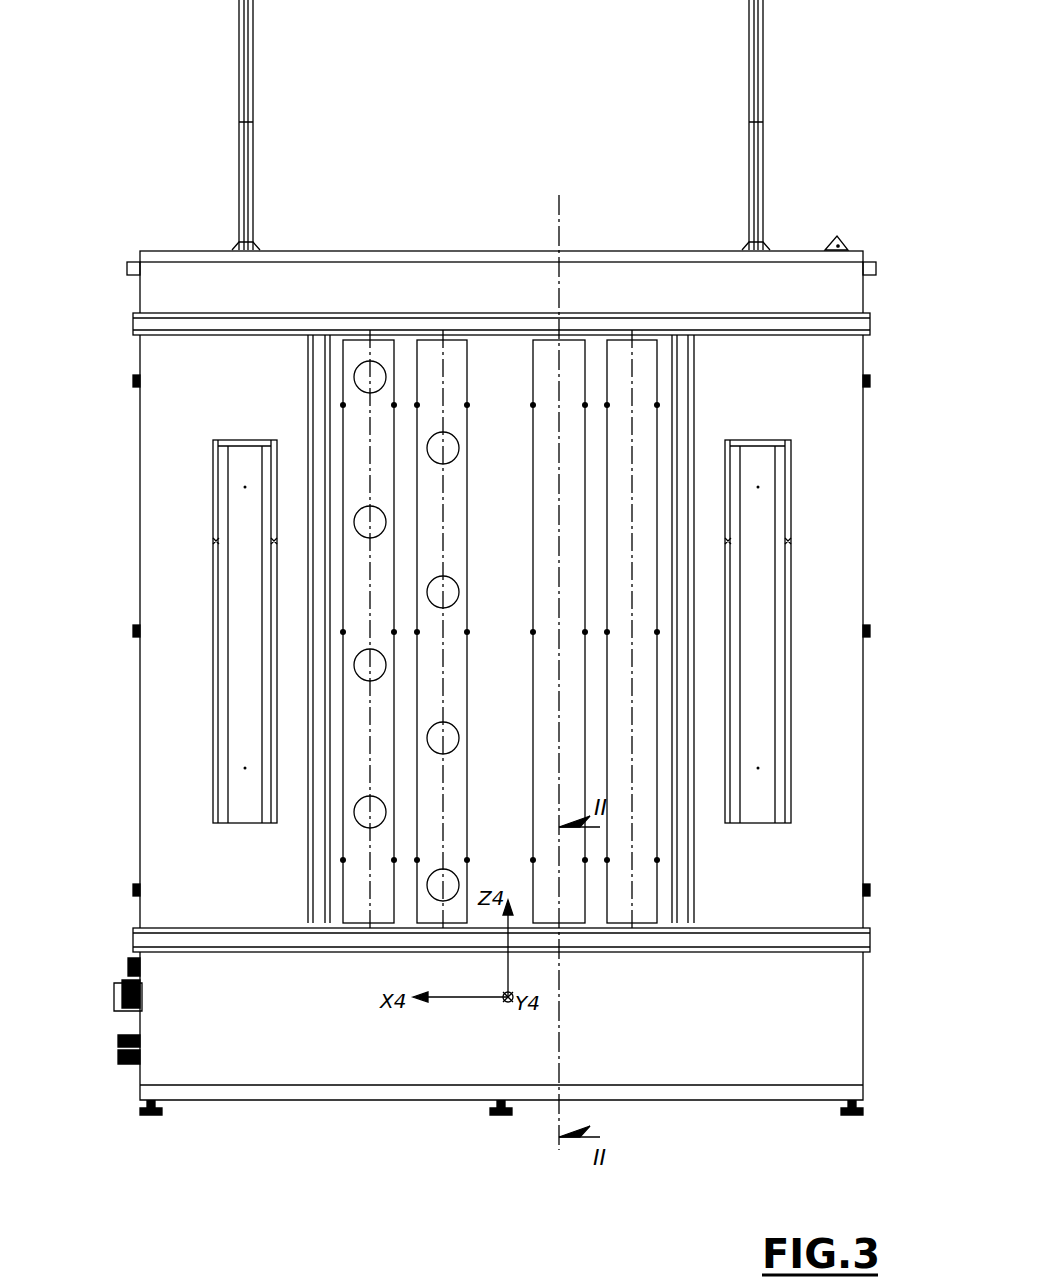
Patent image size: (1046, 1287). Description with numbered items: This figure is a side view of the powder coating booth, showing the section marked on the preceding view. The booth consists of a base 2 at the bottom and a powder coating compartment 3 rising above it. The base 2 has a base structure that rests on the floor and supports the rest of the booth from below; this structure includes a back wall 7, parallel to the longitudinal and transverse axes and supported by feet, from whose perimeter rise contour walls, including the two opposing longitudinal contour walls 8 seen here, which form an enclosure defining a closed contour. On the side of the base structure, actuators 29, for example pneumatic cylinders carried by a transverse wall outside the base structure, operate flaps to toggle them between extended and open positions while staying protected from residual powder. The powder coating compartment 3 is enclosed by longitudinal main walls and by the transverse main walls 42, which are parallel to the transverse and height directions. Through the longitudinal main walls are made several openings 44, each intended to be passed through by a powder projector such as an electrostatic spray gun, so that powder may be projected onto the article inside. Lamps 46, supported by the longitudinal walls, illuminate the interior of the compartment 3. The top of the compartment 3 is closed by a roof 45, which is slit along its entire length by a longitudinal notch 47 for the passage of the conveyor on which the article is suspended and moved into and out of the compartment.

The base 2 is at (806, 1046).
The powder coating compartment 3 is at (808, 530).
The back wall 7 is at (305, 1092).
The longitudinal contour walls 8 is at (255, 1037).
The actuators 29 is at (124, 967).
The transverse main walls 42 is at (135, 500).
The openings 44 is at (365, 815).
The roof 45 is at (397, 278).
The lamps 46 is at (240, 512).
The longitudinal notch 47 is at (308, 250).